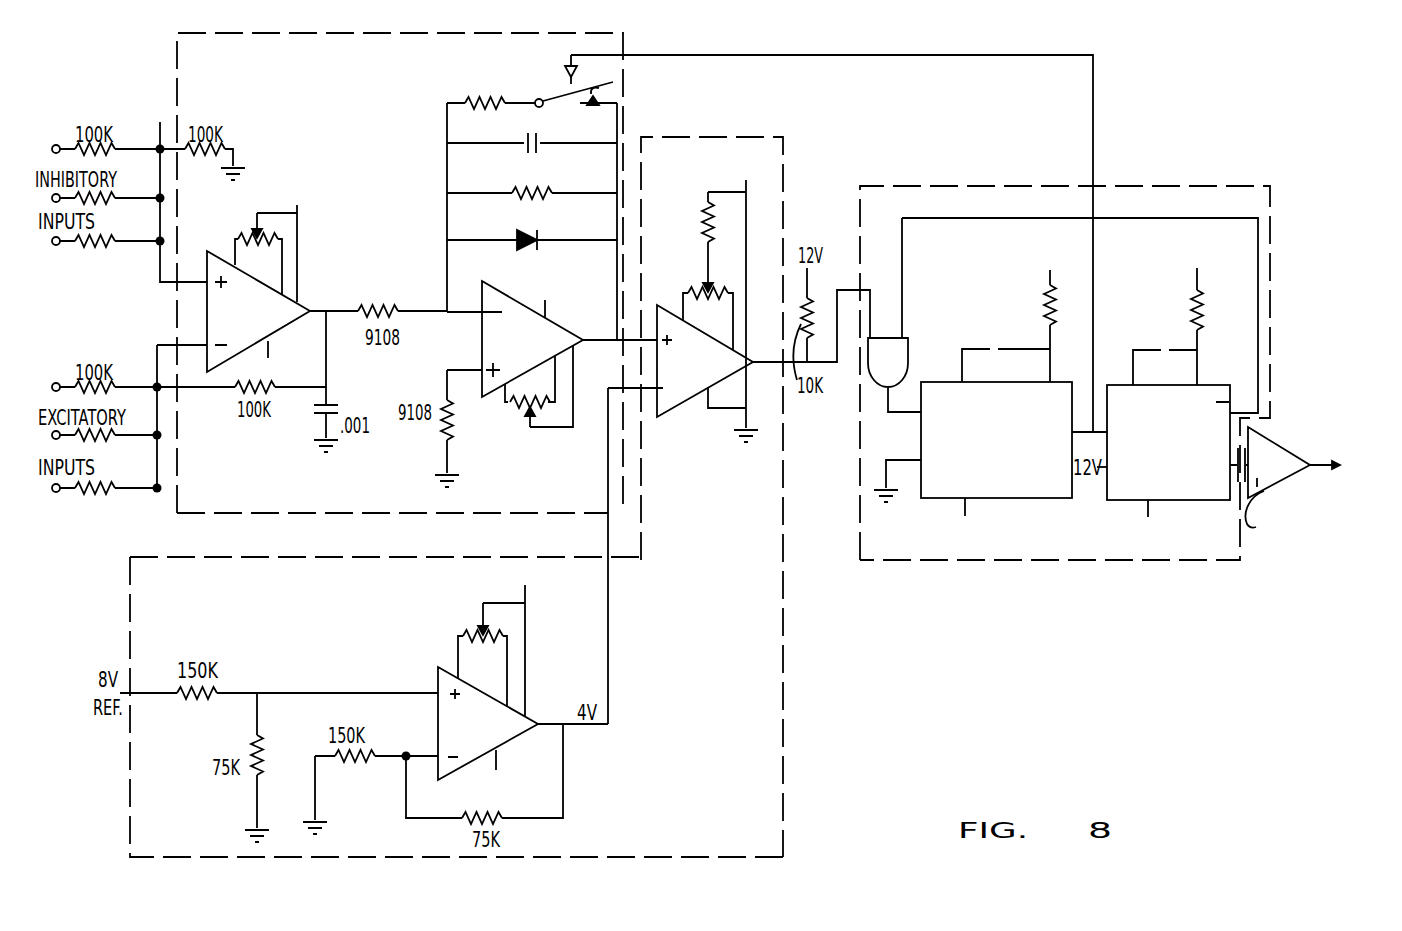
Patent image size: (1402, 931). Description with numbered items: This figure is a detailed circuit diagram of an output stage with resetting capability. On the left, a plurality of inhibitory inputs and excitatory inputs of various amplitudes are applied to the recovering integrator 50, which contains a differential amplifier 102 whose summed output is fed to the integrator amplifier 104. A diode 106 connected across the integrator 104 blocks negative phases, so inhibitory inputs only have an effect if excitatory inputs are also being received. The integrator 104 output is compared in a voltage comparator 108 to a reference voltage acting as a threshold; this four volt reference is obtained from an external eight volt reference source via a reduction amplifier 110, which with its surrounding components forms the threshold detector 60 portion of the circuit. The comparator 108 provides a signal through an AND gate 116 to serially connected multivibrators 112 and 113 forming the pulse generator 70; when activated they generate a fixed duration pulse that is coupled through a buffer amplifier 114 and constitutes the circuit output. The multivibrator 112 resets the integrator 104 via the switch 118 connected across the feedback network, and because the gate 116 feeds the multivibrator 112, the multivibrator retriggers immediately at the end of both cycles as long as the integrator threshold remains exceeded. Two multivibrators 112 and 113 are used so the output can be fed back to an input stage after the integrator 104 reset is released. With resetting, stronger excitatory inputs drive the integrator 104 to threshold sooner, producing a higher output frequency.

The recovering integrator 50 is at (177, 86).
The threshold detector 60 is at (781, 627).
The triggerable pulse generator 70 is at (1130, 187).
The differential amplifier 102 is at (306, 308).
The integrator amplifier 104 is at (523, 257).
The diode 106 is at (537, 247).
The voltage comparator 108 is at (663, 418).
The reduction amplifier 110 is at (524, 716).
The multivibrator 112 is at (1033, 498).
The multivibrator 113 is at (1197, 500).
The buffer amplifier 114 is at (1283, 444).
The AND gate 116 is at (907, 346).
The switch 118 is at (617, 85).